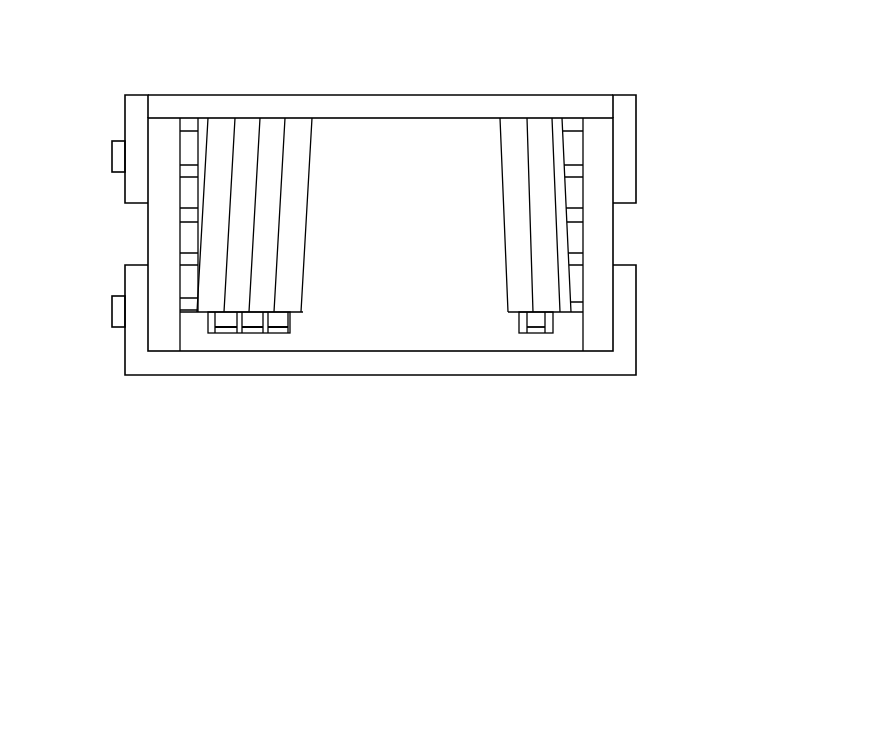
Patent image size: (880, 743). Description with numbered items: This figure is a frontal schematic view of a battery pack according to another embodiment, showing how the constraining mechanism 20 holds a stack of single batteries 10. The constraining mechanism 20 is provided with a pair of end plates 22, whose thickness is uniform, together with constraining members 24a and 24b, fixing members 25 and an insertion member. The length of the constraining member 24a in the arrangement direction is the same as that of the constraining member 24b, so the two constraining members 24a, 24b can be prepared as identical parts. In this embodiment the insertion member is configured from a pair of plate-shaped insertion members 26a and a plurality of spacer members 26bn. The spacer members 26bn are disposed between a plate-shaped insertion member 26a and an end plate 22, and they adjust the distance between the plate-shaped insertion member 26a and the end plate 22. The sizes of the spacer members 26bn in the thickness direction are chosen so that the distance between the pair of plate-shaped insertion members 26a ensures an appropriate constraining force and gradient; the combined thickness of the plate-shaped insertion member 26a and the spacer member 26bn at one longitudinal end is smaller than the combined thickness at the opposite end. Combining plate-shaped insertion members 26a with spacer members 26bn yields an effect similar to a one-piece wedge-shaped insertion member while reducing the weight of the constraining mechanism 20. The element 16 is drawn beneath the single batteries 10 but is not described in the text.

The single battery 10 is at (266, 192).
The terminal connector 16 is at (292, 327).
The constraining mechanism 20 is at (411, 324).
The end plate 22 is at (155, 337).
The constraining member 24a is at (638, 347).
The constraining member 24b is at (638, 124).
The fixing member 25 is at (112, 158).
The plate-shaped insertion member 26a is at (203, 138).
The spacer member 26bn is at (182, 303).